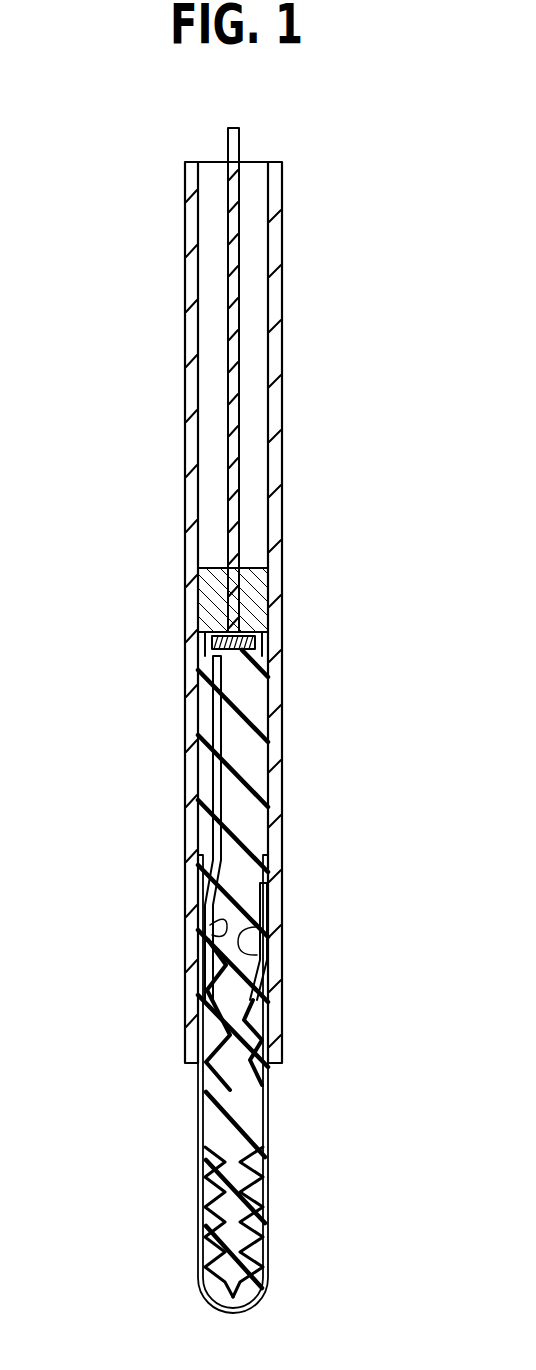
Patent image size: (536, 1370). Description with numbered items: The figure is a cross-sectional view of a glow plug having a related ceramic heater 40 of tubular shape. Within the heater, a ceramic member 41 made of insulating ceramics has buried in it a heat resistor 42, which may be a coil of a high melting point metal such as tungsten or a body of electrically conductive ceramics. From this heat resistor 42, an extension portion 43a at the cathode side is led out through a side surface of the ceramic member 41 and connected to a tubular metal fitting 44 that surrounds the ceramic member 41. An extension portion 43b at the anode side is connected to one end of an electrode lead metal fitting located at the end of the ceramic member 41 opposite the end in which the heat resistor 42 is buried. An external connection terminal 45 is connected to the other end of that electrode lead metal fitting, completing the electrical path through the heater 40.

The ceramic heater 40 is at (360, 364).
The ceramic member 41 is at (262, 1122).
The heat resistor 42 is at (258, 1245).
The extension portion at a cathode side 43a is at (264, 937).
The extension portion at an anode side 43b is at (225, 908).
The tubular metal fitting 44 is at (276, 770).
The external connection terminal 45 is at (239, 468).